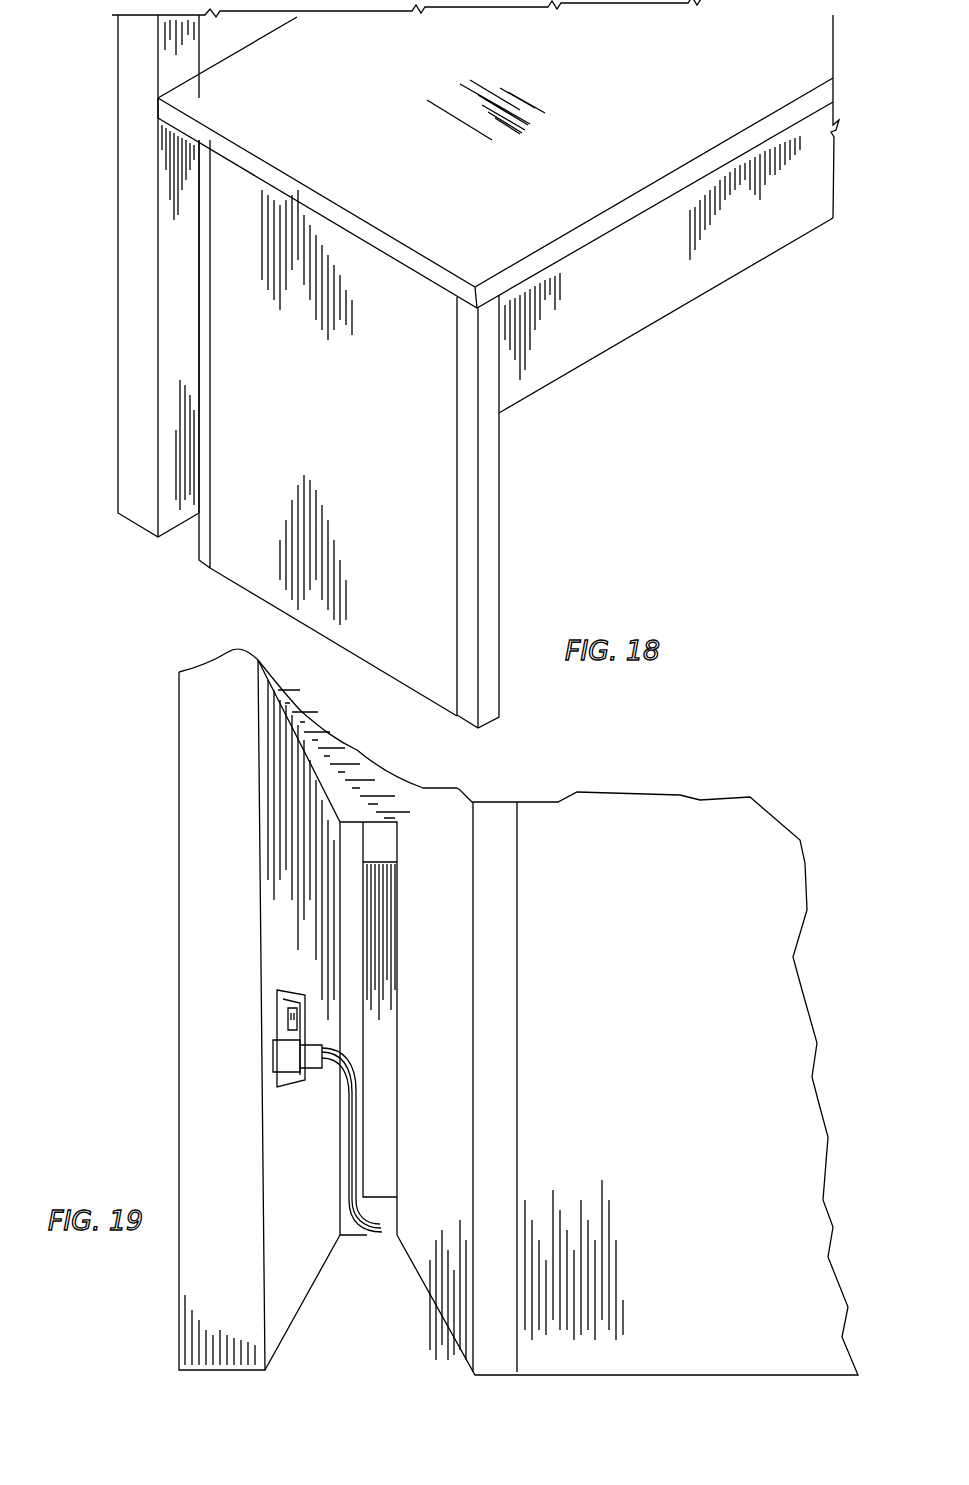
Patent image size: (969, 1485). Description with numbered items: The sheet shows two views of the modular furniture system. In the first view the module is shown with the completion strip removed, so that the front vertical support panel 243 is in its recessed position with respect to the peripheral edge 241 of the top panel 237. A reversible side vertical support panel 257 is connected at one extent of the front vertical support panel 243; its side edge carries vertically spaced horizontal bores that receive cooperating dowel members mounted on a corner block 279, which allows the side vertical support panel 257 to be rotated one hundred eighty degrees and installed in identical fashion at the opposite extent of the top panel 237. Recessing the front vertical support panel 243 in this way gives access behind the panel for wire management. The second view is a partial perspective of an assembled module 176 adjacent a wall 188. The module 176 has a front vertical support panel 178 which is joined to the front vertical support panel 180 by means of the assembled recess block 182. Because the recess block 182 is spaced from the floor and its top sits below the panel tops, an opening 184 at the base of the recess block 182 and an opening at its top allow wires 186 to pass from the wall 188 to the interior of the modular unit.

In FIG. 18, the top panel 237 is at (690, 147).
In FIG. 18, the peripheral edge 241 is at (197, 80).
In FIG. 18, the front vertical support panel 243 is at (198, 425).
In FIG. 18, the corner block 279 is at (488, 453).
In FIG. 18, the side vertical support panel 257 is at (432, 537).
In FIG. 19, the wall 188 is at (285, 758).
In FIG. 19, the recess block 182 is at (380, 835).
In FIG. 19, the module 176 is at (665, 766).
In FIG. 19, the front vertical support panel 178 is at (460, 830).
In FIG. 19, the front vertical support panel 180 is at (460, 863).
In FIG. 19, the opening 184 is at (388, 1223).
In FIG. 19, the wires 186 is at (357, 1112).